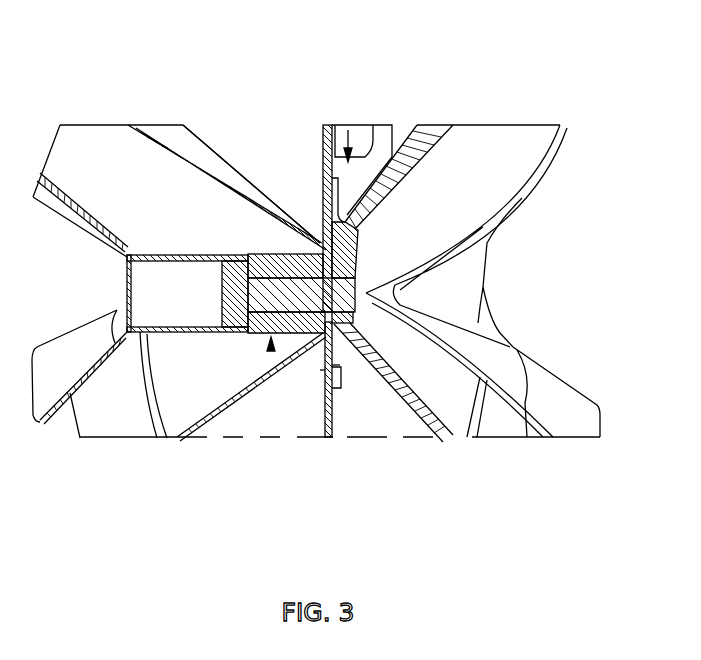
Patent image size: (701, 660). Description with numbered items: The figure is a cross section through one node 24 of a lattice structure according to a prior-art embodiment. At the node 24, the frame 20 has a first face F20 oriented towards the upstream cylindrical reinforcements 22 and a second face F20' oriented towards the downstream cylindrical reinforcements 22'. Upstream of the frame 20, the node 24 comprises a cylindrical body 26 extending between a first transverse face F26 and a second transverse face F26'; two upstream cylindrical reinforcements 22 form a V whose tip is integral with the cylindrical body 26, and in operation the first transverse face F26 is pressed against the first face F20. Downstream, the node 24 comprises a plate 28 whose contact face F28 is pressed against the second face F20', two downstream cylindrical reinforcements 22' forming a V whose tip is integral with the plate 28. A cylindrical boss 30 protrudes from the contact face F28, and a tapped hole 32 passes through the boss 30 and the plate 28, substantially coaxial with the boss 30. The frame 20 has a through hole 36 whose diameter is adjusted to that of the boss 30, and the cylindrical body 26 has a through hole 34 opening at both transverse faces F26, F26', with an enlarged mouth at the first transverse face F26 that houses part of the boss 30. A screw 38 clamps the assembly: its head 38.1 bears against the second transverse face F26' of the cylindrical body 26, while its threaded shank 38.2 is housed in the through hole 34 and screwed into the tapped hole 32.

The frame 20 is at (345, 123).
The upstream cylindrical reinforcement 22 is at (179, 156).
The downstream cylindrical reinforcement 22' is at (494, 281).
The node 24 is at (248, 92).
The cylindrical body 26 is at (272, 353).
The plate 28 is at (354, 350).
The cylindrical boss 30 is at (270, 254).
The tapped hole 32 is at (432, 428).
The through hole 34 is at (232, 245).
The through hole 36 is at (325, 243).
The screw 38 is at (213, 280).
The head 38.1 is at (178, 328).
The threaded shank 38.2 is at (263, 333).
The first face F20 is at (329, 122).
The second face F20' is at (399, 152).
The first transverse face F26 is at (343, 437).
The second transverse face F26' is at (228, 414).
The contact face F28 is at (320, 370).